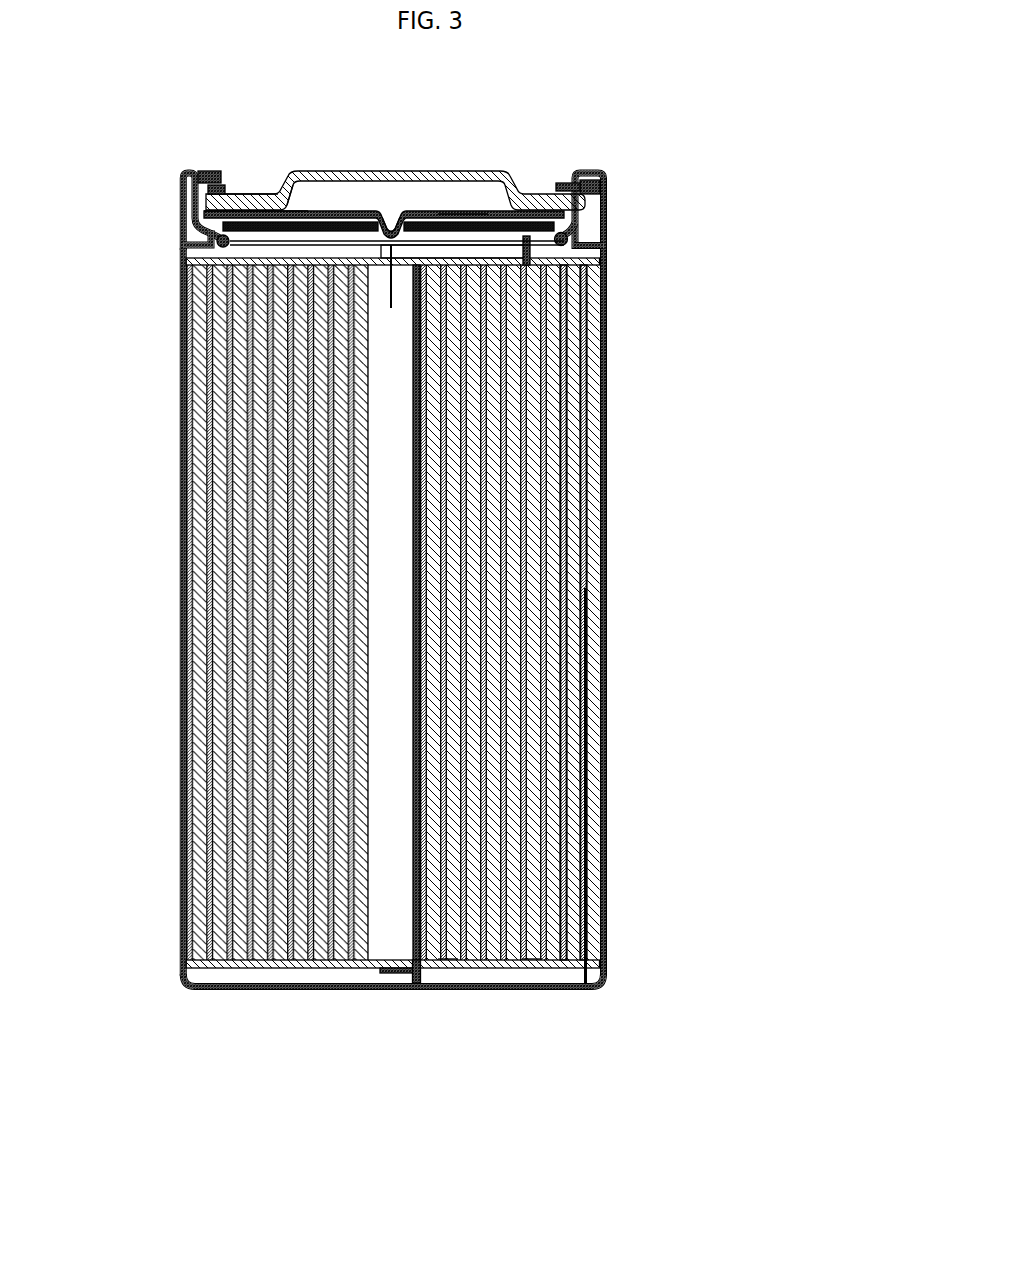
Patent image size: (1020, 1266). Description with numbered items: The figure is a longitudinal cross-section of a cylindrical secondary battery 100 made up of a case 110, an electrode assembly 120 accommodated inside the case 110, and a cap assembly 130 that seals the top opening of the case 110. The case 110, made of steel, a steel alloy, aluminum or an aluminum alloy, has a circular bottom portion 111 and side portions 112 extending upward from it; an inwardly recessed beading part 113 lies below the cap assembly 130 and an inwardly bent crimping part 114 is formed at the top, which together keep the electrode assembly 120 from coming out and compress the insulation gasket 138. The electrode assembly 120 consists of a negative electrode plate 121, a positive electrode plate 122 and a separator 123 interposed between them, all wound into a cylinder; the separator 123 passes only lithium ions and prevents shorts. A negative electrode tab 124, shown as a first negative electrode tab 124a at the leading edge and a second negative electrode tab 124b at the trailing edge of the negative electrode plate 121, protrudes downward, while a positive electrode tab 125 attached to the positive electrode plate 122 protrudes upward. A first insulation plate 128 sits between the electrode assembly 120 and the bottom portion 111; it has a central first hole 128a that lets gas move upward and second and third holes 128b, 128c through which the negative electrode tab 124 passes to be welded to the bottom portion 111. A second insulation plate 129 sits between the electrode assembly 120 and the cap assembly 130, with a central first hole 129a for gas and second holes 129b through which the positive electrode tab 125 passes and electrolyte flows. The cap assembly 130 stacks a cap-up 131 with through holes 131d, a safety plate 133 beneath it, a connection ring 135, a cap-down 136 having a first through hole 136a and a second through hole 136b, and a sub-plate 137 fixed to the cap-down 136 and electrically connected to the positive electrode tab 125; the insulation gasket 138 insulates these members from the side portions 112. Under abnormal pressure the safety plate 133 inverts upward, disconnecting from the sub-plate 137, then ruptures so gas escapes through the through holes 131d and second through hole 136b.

The secondary battery 100 is at (658, 104).
The case 110 is at (610, 885).
The bottom portion 111 is at (252, 983).
The side portions 112 is at (600, 812).
The beading part 113 is at (600, 237).
The crimping part 114 is at (584, 165).
The electrode assembly 120 is at (692, 506).
The negative electrode plate 121 is at (585, 517).
The positive electrode plate 122 is at (578, 618).
The separator 123 is at (575, 564).
The negative electrode tab 124 is at (555, 1042).
The first negative electrode tab 124a is at (440, 953).
The second negative electrode tab 124b is at (522, 953).
The positive electrode tab 125 is at (594, 256).
The first insulation plate 128 is at (595, 958).
The first hole 128a is at (375, 966).
The second hole 128b is at (404, 974).
The third hole 128c is at (581, 976).
The second insulation plate 129 is at (372, 238).
The first hole 129a is at (383, 298).
The second holes 129b is at (380, 264).
The cap assembly 130 is at (246, 122).
The cap-up 131 is at (486, 172).
The through holes 131d is at (352, 173).
The safety plate 133 is at (455, 205).
The connection ring 135 is at (247, 190).
The cap-down 136 is at (530, 210).
The first through hole 136a is at (392, 205).
The second through hole 136b is at (289, 203).
The sub-plate 137 is at (345, 231).
The insulation gasket 138 is at (600, 185).